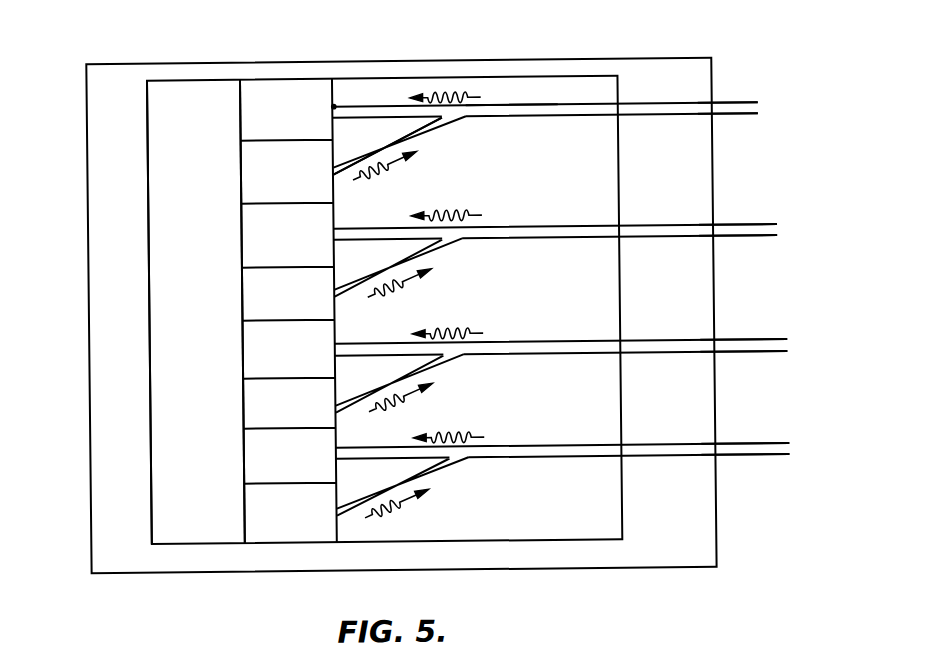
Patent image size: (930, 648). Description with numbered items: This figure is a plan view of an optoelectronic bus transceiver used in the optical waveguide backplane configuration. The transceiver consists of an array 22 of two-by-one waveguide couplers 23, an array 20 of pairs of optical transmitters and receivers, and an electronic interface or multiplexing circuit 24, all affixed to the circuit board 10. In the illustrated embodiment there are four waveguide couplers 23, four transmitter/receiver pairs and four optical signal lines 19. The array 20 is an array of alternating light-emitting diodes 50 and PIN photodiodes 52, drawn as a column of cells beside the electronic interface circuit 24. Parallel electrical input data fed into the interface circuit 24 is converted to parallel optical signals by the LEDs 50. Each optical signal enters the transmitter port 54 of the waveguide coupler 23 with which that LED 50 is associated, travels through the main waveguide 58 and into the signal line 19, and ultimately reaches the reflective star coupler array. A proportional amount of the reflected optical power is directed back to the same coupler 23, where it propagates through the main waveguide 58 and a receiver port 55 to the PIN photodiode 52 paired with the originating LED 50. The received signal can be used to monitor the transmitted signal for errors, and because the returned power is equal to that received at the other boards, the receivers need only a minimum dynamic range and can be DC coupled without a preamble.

The circuit board 10 is at (116, 579).
The optical signal line 19 is at (744, 295).
The array of optical transmitters and receivers 20 is at (242, 240).
The array of 2×1 waveguide couplers 22 is at (602, 172).
The 2×1 waveguide coupler 23 is at (540, 106).
The electronic interface circuit 24 is at (202, 538).
The light-emitting diode 50 is at (283, 353).
The PIN photodiode 52 is at (288, 311).
The transmitter port 54 is at (336, 173).
The receiver port 55 is at (336, 106).
The main waveguide 58 is at (494, 112).